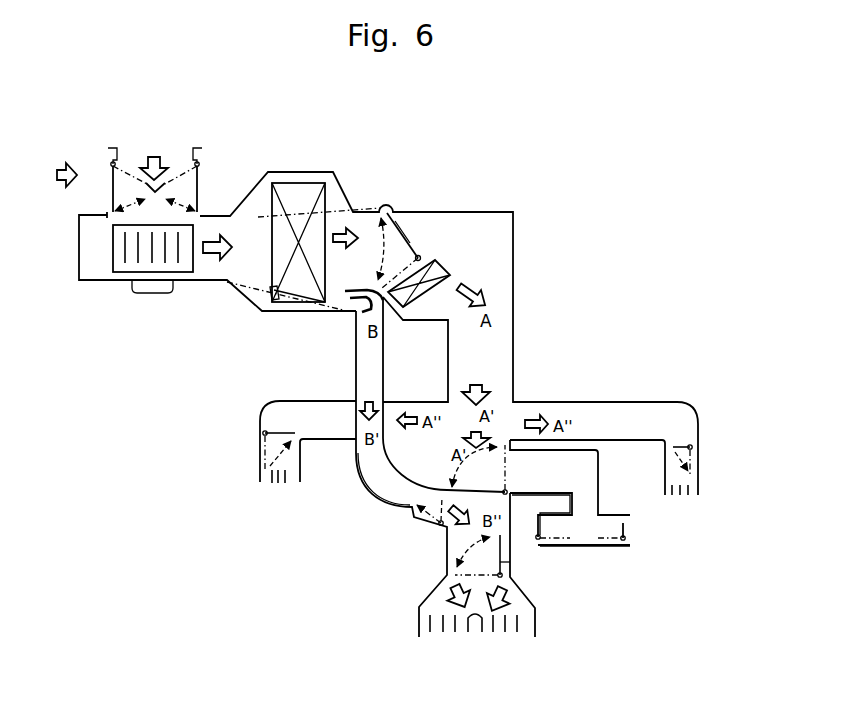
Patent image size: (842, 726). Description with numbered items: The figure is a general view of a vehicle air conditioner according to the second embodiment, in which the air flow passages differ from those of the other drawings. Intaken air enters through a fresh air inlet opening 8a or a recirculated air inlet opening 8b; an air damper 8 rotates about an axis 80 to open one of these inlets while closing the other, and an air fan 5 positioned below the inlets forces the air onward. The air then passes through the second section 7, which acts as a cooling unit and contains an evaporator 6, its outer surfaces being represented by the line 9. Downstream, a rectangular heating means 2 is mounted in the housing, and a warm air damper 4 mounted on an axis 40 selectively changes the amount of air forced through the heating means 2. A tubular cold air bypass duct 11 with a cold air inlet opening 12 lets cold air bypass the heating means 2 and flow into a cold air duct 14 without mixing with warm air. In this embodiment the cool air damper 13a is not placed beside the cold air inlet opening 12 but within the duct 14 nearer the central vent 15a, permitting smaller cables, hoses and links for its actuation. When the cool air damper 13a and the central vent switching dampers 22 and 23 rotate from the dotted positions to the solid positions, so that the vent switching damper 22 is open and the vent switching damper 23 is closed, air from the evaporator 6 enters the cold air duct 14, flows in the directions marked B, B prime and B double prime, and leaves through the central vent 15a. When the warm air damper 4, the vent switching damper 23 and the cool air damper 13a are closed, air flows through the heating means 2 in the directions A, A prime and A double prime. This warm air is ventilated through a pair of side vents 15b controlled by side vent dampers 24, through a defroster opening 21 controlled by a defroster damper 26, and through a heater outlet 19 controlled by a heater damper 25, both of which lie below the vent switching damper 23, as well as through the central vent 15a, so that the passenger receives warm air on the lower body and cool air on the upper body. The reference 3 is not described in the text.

The heating means 2 is at (450, 272).
The air flow direction 3 is at (412, 231).
The warm air damper 4 is at (404, 235).
The air fan 5 is at (118, 268).
The evaporator 6 is at (270, 255).
The second section 7 is at (243, 297).
The air damper 8 is at (112, 191).
The fresh air inlet opening 8a is at (152, 145).
The recirculated air inlet opening 8b is at (92, 172).
The line representing outer surfaces of second section 9 is at (347, 211).
The cold air bypass duct 11 is at (356, 291).
The cold air inlet opening 12 is at (343, 298).
The cool air damper 13a is at (426, 520).
The cold air duct 14 is at (367, 487).
The central vent 15a is at (455, 640).
The side vents 15b is at (278, 490).
The heater outlet 19 is at (626, 526).
The defroster opening 21 is at (540, 516).
The vent switching damper 22 is at (512, 562).
The vent switching damper 23 is at (477, 492).
The side vent dampers 24 is at (266, 433).
The heater damper 25 is at (627, 541).
The defroster damper 26 is at (537, 539).
The axis 40 is at (422, 261).
The axis 80 is at (112, 162).